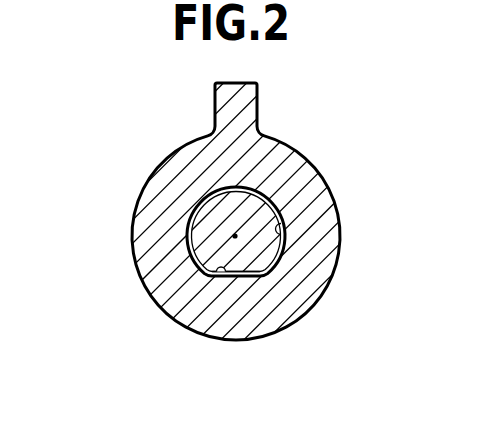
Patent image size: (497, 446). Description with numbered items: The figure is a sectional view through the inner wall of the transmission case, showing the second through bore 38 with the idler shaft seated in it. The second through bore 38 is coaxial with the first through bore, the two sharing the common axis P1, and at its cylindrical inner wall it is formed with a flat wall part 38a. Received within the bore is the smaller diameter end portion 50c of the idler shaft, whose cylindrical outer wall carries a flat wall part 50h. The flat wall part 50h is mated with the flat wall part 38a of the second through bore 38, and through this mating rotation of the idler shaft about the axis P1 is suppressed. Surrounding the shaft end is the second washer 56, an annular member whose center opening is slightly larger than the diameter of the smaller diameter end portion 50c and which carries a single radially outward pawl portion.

The second washer 56 is at (295, 186).
The second through bore 38 is at (278, 238).
The smaller diameter end portion 50c is at (196, 246).
The flat wall part 50h is at (248, 277).
The flat wall part 38a is at (226, 271).
The axis P1 is at (236, 242).